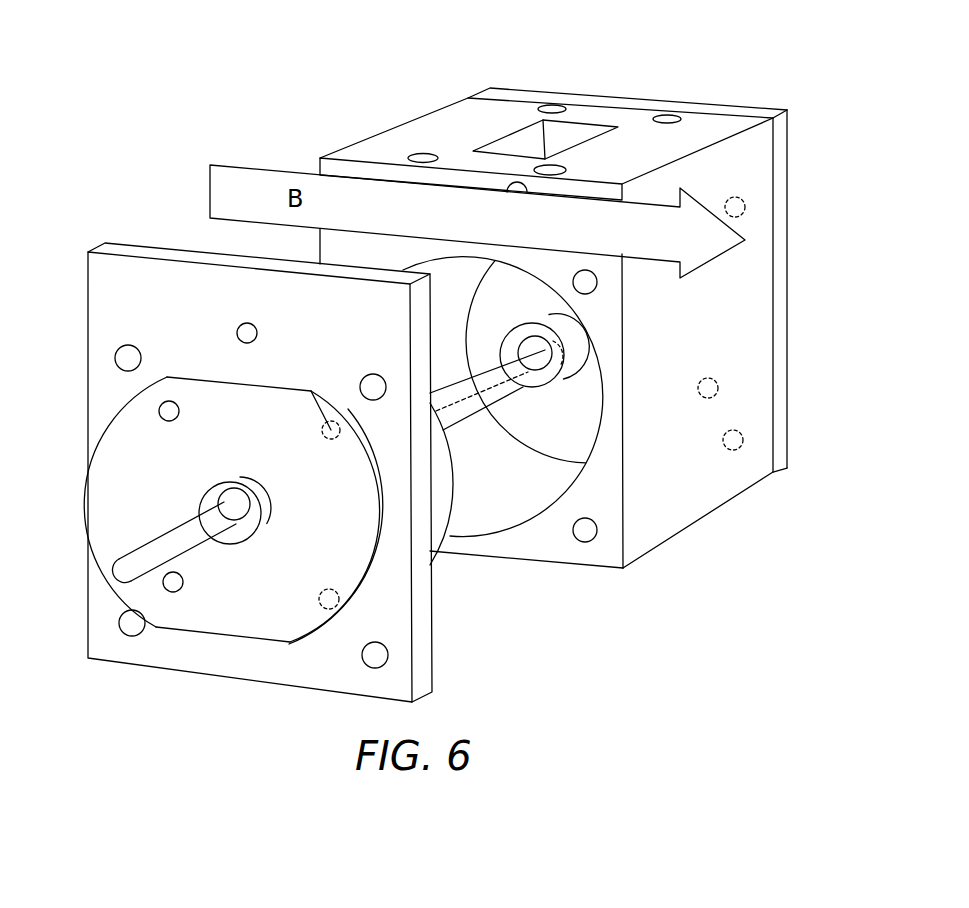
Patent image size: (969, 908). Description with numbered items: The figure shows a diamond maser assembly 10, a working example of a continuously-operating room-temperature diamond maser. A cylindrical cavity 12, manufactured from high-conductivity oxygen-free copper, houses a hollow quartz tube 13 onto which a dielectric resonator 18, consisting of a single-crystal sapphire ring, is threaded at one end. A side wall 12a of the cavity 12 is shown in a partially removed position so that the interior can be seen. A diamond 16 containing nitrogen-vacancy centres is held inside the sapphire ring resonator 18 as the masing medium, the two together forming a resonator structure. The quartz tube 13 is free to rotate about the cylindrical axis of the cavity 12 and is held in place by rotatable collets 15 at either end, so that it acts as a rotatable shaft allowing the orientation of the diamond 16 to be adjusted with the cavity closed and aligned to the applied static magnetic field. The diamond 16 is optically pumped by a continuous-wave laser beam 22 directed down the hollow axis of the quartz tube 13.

The diamond maser assembly 10 is at (750, 78).
The cylindrical cavity 12 is at (390, 143).
The side wall 12a is at (102, 293).
The hollow quartz tube 13 is at (465, 410).
The rotatable collets 15 is at (122, 457).
The diamond 16 is at (545, 350).
The dielectric resonator 18 is at (552, 382).
The laser beam 22 is at (144, 562).